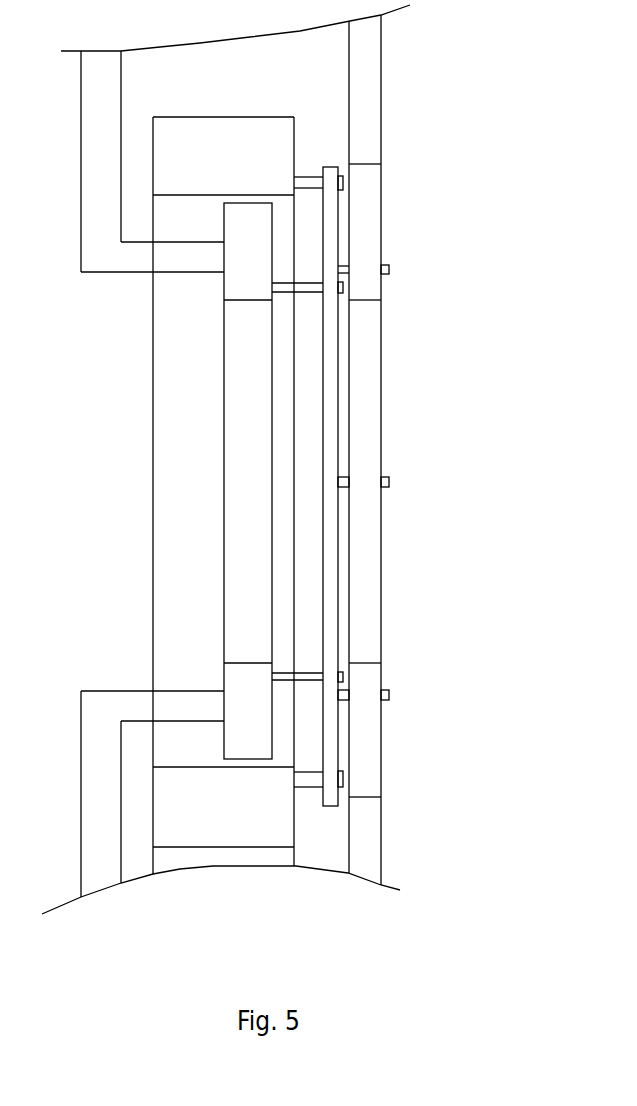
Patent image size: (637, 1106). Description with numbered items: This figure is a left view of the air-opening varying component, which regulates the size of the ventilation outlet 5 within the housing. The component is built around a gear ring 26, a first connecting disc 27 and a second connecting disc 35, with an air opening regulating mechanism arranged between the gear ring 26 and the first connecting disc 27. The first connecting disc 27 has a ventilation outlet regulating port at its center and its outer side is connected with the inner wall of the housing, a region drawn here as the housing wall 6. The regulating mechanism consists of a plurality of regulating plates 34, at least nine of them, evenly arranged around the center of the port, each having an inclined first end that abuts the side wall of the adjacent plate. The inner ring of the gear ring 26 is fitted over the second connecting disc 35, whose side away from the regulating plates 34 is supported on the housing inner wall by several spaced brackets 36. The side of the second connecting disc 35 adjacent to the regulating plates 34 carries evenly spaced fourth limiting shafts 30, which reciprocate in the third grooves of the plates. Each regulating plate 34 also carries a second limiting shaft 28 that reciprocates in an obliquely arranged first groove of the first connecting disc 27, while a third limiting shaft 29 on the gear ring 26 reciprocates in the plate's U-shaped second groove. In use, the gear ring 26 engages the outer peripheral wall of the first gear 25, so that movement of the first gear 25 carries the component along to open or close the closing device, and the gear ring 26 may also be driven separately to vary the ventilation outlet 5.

The ventilation outlet 5 is at (369, 434).
The housing wall 6 is at (372, 82).
The first gear 25 is at (251, 855).
The gear ring 26 is at (200, 609).
The first connecting disc 27 is at (370, 225).
The second limiting shaft 28 is at (389, 269).
The third limiting shaft 29 is at (343, 183).
The fourth limiting shaft 30 is at (315, 675).
The regulating plate 34 is at (332, 550).
The second connecting disc 35 is at (247, 267).
The bracket 36 is at (102, 870).